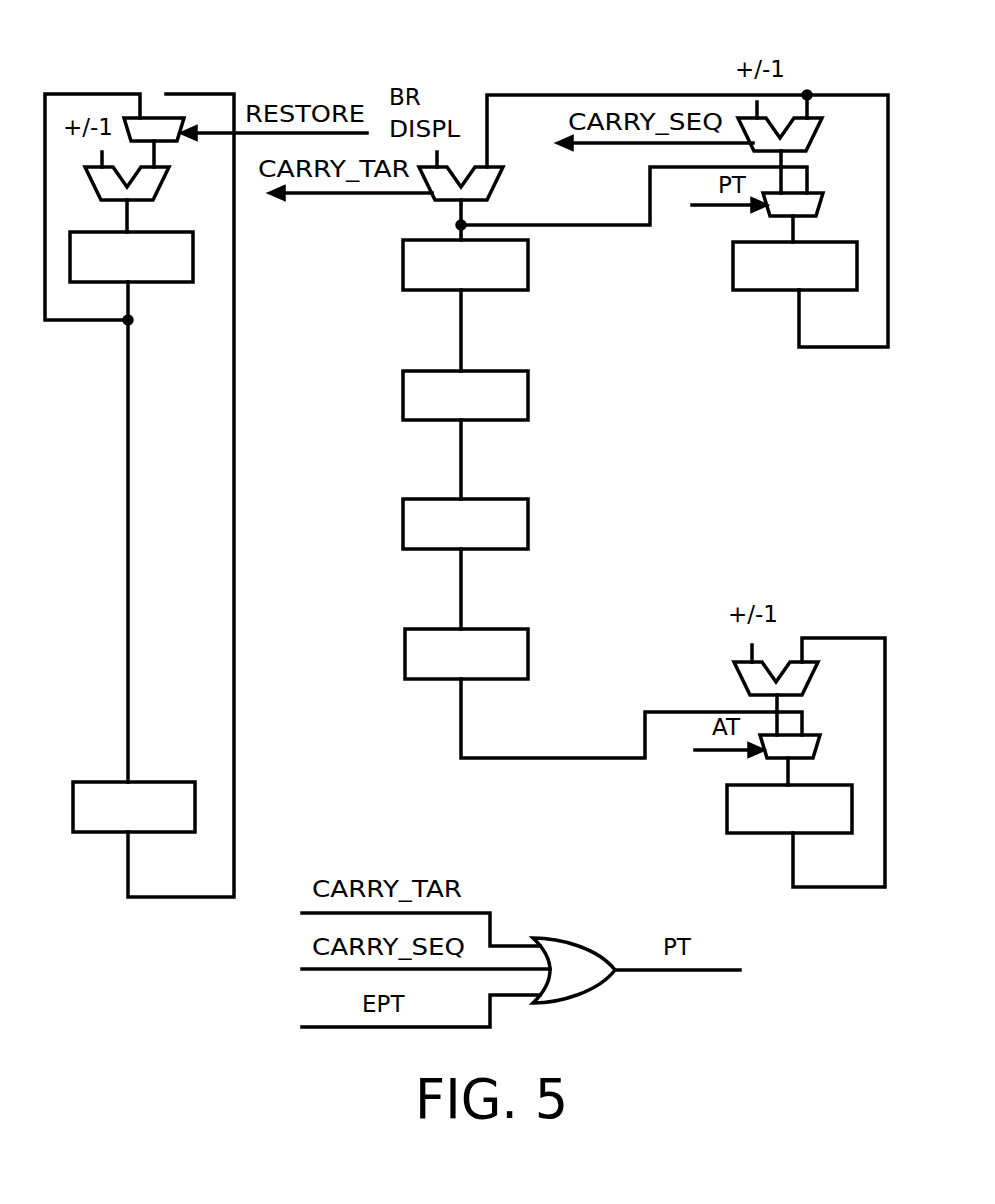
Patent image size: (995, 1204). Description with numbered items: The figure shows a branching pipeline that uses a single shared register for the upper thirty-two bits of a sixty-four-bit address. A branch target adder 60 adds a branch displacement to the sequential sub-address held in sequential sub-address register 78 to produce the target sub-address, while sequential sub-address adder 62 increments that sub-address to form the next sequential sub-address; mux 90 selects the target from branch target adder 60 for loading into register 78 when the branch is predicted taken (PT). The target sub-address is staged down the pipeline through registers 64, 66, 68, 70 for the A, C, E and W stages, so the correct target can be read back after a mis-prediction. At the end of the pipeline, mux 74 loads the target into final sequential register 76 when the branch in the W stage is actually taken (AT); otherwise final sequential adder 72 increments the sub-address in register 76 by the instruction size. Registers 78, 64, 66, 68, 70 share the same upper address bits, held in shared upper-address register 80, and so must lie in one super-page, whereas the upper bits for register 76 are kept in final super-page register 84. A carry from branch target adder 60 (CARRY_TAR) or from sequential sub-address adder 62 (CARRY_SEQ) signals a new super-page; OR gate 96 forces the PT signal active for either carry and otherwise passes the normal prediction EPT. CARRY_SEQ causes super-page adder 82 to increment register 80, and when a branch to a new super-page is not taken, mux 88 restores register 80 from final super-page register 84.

The branch target adder 60 is at (490, 198).
The sequential sub-address adder 62 is at (808, 150).
The A-stage target register 64 is at (498, 291).
The C-stage target register 66 is at (498, 421).
The E-stage target register 68 is at (498, 550).
The W-stage target register 70 is at (498, 680).
The final sequential adder 72 is at (803, 694).
The mux 74 is at (812, 758).
The final sequential register 76 is at (818, 834).
The sequential sub-address register 78 is at (823, 291).
The shared upper-address register 80 is at (140, 283).
The super-page adder 82 is at (152, 198).
The final super-page register 84 is at (145, 833).
The mux 88 is at (163, 146).
The mux 90 is at (817, 216).
The OR gate 96 is at (576, 938).